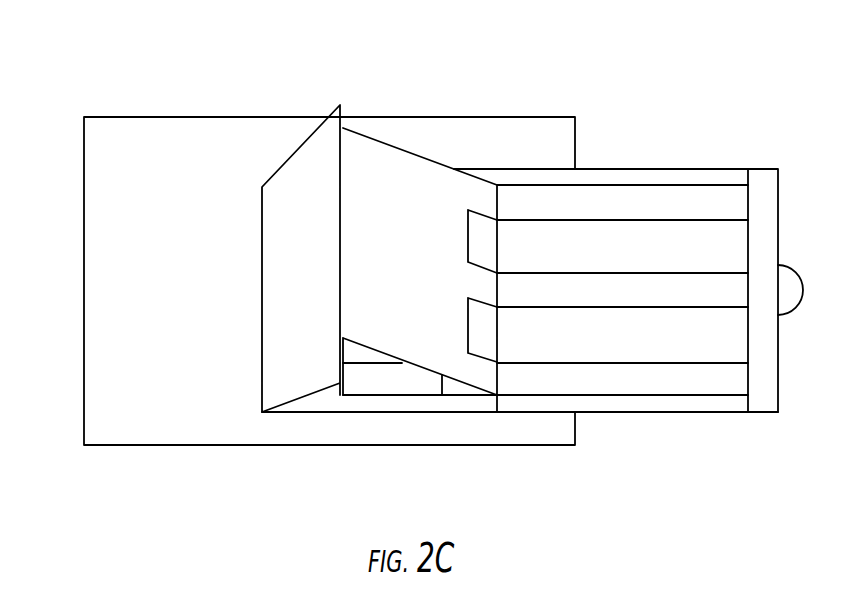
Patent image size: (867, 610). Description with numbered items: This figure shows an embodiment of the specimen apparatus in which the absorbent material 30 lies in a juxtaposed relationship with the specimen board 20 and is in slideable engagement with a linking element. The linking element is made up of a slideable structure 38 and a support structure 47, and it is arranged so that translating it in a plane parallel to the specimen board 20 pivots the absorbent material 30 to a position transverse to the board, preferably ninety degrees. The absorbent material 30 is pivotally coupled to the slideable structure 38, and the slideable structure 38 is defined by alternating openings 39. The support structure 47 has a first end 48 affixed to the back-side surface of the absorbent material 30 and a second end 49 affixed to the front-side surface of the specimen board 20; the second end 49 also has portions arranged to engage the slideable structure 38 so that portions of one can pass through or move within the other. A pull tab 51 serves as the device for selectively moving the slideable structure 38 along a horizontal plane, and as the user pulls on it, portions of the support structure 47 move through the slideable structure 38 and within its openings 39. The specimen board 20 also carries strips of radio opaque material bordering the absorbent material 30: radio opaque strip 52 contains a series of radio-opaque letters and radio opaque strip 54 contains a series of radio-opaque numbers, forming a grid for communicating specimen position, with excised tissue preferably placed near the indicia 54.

The specimen board 20 is at (566, 155).
The absorbent material 30 is at (300, 145).
The slideable structure 38 is at (772, 397).
The alternating openings 39 is at (693, 198).
The support structure 47 is at (398, 187).
The first end 48 is at (355, 333).
The second end 49 is at (496, 396).
The pull tab 51 is at (795, 288).
The radio opaque strip 52 is at (435, 138).
The radio opaque strip 54 is at (95, 228).